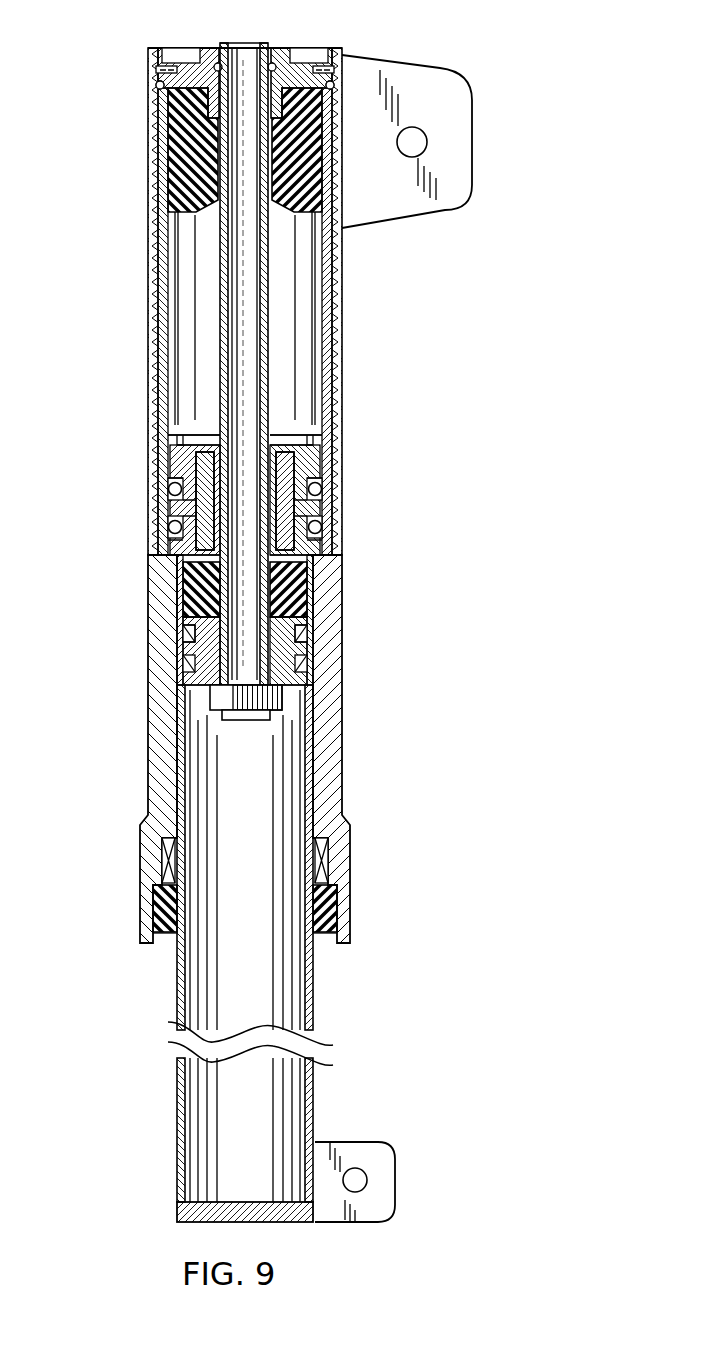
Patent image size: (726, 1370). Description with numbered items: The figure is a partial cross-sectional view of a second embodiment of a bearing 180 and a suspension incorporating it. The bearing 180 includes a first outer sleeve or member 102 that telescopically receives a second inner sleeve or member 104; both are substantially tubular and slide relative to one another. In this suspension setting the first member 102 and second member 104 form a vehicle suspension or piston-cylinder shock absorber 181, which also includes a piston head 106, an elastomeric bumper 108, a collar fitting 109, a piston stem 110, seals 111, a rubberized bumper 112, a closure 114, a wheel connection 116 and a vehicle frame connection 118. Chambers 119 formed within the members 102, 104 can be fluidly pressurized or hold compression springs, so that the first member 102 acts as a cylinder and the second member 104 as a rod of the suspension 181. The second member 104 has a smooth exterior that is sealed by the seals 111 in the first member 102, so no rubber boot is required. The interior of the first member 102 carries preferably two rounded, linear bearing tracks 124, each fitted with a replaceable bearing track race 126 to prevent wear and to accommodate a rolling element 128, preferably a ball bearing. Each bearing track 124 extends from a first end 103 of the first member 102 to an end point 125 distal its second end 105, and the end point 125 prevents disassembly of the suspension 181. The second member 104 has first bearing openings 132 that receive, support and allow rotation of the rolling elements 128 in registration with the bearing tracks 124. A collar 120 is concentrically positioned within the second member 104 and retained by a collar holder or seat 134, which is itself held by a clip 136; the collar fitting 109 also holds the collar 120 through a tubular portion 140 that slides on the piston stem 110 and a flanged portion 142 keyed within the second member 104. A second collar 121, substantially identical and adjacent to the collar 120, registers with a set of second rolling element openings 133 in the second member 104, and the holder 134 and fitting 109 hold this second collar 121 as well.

The first outer sleeve or member 102 is at (335, 718).
The first end 103 is at (333, 48).
The second inner sleeve or member 104 is at (180, 973).
The second end 105 is at (340, 872).
The piston head 106 is at (195, 652).
The elastomeric bumper 108 is at (183, 626).
The collar fitting 109 is at (182, 560).
The piston stem 110 is at (222, 252).
The seals 111 is at (327, 930).
The rubberized bumper 112 is at (185, 122).
The closure 114 is at (190, 72).
The wheel connection 116 is at (445, 90).
The vehicle frame connection 118 is at (378, 1177).
The chambers 119 is at (203, 312).
The collar 120 is at (170, 512).
The second collar 121 is at (182, 468).
The bearing track 124 is at (340, 290).
The end point 125 is at (320, 546).
The bearing track race 126 is at (330, 235).
The rolling element 128 is at (170, 488).
The first bearing openings 132 is at (325, 510).
The second rolling element openings 133 is at (320, 465).
The collar holder or seat 134 is at (330, 445).
The clip 136 is at (335, 420).
The tubular portion 140 is at (190, 506).
The flanged portion 142 is at (195, 590).
The bearing 180 is at (404, 496).
The vehicle suspension or piston-cylinder shock absorber 181 is at (445, 670).